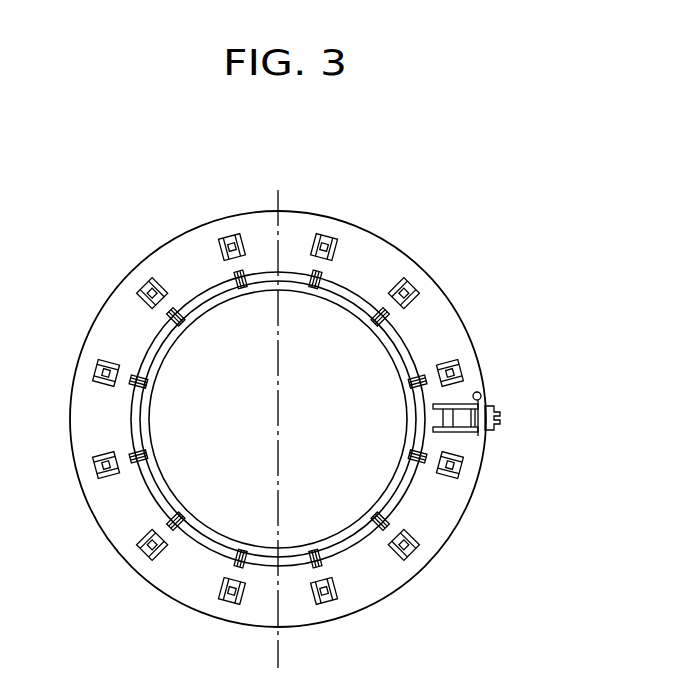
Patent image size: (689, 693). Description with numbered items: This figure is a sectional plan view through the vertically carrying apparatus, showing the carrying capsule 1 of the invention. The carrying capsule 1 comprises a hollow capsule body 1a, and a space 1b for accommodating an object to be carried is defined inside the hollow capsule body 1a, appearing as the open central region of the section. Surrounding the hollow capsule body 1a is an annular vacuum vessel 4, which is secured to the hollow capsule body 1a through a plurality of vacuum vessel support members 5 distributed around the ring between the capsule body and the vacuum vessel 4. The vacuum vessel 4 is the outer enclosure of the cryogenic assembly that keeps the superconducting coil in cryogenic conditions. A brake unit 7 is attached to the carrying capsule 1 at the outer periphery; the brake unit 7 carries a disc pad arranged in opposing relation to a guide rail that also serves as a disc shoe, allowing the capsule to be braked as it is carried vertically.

The carrying capsule 1 is at (414, 238).
The hollow capsule body 1a is at (170, 353).
The space 1b is at (256, 476).
The annular vacuum vessel 4 is at (460, 316).
The vacuum vessel support member 5 is at (110, 365).
The brake unit 7 is at (503, 413).